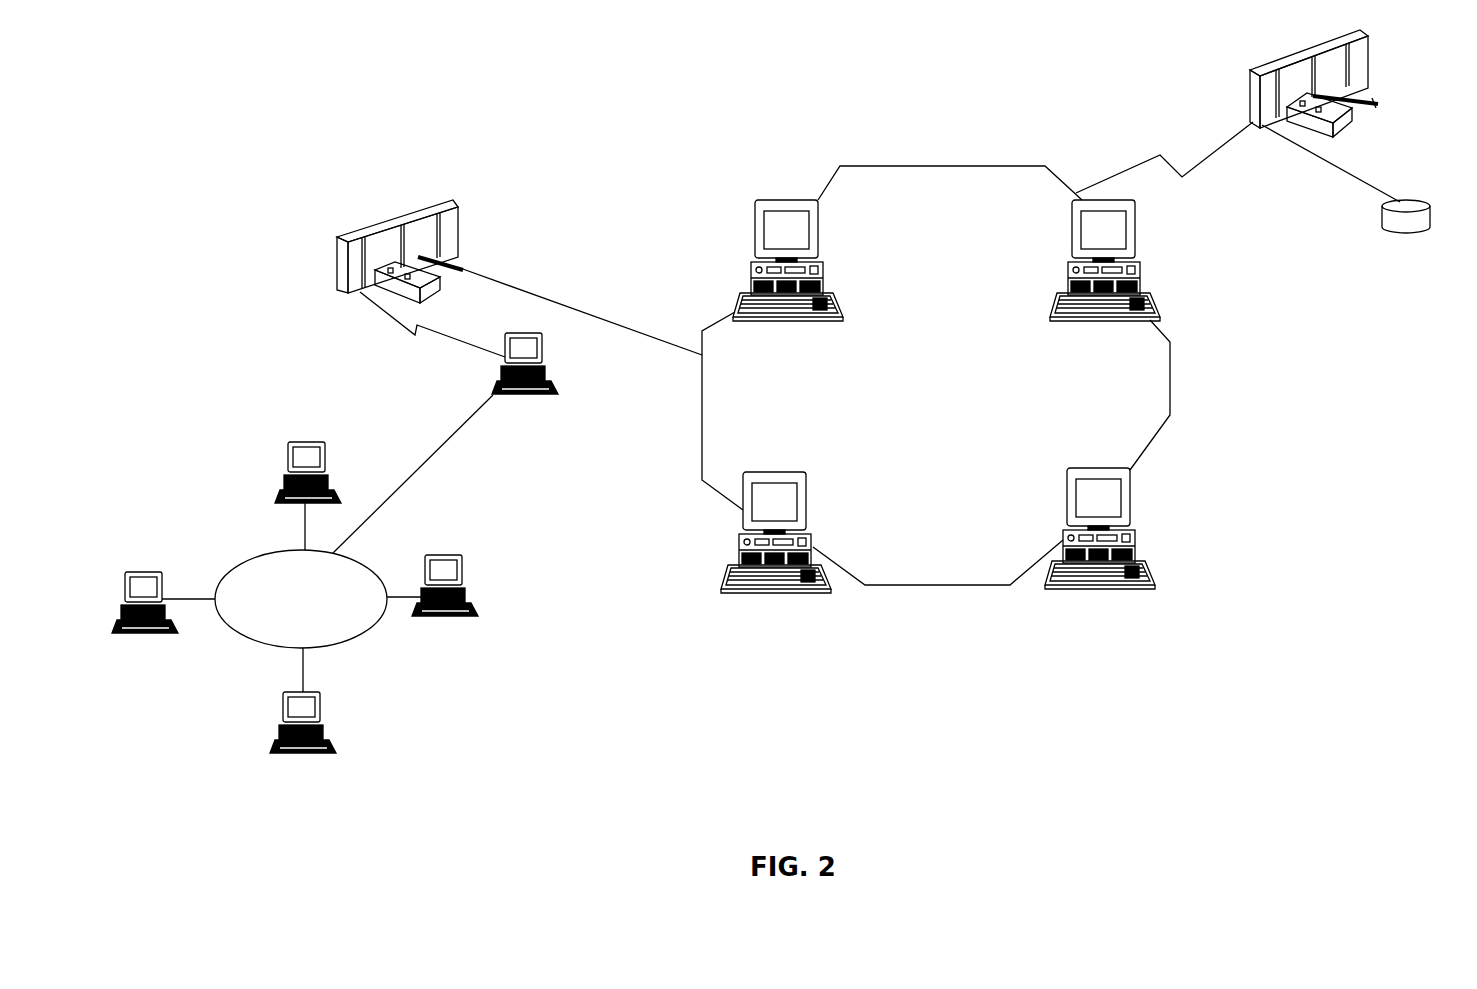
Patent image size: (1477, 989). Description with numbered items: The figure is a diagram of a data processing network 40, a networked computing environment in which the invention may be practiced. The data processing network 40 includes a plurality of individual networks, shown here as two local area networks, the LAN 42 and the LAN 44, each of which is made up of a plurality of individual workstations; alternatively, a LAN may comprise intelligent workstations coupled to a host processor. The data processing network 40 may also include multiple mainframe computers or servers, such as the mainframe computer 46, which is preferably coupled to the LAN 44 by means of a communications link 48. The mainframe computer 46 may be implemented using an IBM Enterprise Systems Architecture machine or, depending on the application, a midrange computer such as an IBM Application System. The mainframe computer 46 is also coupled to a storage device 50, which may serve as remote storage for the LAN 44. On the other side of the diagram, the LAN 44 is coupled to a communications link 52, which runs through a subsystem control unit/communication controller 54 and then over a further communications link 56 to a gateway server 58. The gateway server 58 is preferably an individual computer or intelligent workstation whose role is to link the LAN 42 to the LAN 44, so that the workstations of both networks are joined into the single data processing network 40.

The data processing network 40 is at (958, 152).
The LAN 42 is at (327, 543).
The LAN 44 is at (936, 375).
The mainframe computer 46 is at (1320, 48).
The communications link 48 is at (1160, 155).
The storage device 50 is at (1418, 200).
The communications link 52 is at (588, 313).
The subsystem control unit/communication controller 54 is at (452, 203).
The communications link 56 is at (373, 303).
The gateway server 58 is at (516, 334).